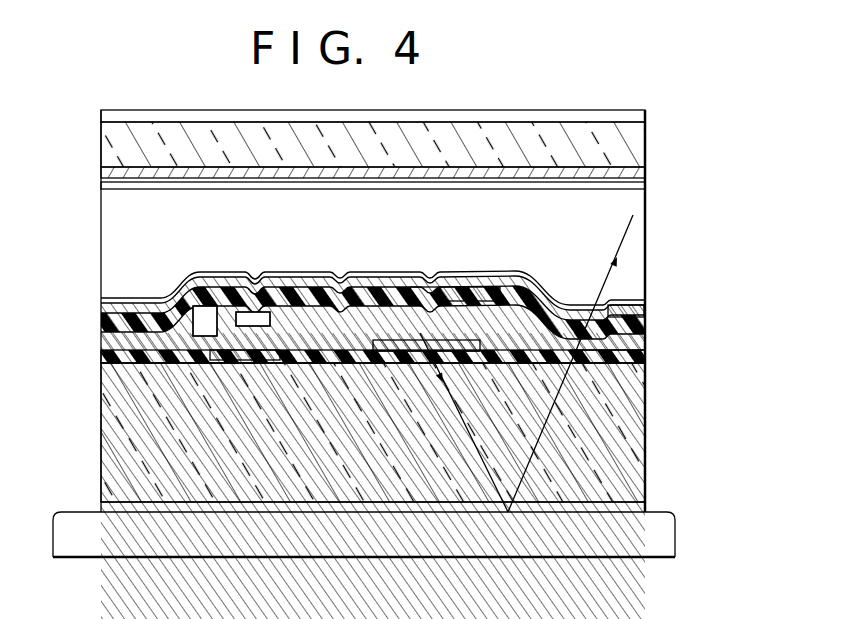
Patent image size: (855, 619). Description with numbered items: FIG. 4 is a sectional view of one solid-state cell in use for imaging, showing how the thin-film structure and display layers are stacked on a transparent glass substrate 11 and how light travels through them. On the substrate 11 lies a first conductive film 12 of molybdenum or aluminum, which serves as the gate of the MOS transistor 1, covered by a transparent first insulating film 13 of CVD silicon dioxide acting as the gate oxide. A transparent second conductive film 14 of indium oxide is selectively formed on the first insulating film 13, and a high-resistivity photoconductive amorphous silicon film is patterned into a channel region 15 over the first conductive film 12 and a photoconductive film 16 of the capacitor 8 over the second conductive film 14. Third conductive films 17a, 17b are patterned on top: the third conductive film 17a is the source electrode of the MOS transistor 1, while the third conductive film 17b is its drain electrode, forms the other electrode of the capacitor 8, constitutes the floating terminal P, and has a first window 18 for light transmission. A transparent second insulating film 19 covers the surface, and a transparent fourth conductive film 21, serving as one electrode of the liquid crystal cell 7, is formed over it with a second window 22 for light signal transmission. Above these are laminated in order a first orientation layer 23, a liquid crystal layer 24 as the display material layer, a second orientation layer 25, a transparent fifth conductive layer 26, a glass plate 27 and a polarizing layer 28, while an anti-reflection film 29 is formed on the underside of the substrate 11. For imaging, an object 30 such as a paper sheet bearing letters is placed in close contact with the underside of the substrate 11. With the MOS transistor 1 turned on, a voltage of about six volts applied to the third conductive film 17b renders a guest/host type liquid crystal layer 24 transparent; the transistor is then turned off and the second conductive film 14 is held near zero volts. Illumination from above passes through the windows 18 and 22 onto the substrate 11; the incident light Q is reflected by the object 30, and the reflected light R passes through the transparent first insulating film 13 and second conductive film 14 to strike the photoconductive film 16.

The MOS transistor 1 is at (258, 255).
The liquid crystal cell 7 is at (95, 172).
The capacitor 8 is at (480, 378).
The transparent glass substrate 11 is at (632, 418).
The first conductive film 12 is at (280, 355).
The first insulating film 13 is at (648, 355).
The second conductive film 14 is at (437, 352).
The channel region 15 is at (242, 355).
The photoconductive film 16 is at (392, 352).
The third conductive film 17a is at (170, 312).
The third conductive film 17b is at (477, 307).
The first window 18 is at (580, 370).
The second insulating film 19 is at (648, 322).
The fourth conductive film 21 is at (362, 278).
The second window 22 is at (598, 310).
The first orientation layer 23 is at (522, 271).
The liquid crystal layer 24 is at (647, 245).
The second orientation layer 25 is at (645, 185).
The fifth conductive layer 26 is at (645, 172).
The glass plate 27 is at (645, 138).
The polarizing layer 28 is at (650, 112).
The anti-reflection film 29 is at (648, 503).
The object 30 is at (672, 537).
The floating terminal P is at (424, 288).
The incident light Q is at (540, 444).
The reflected light R is at (485, 467).